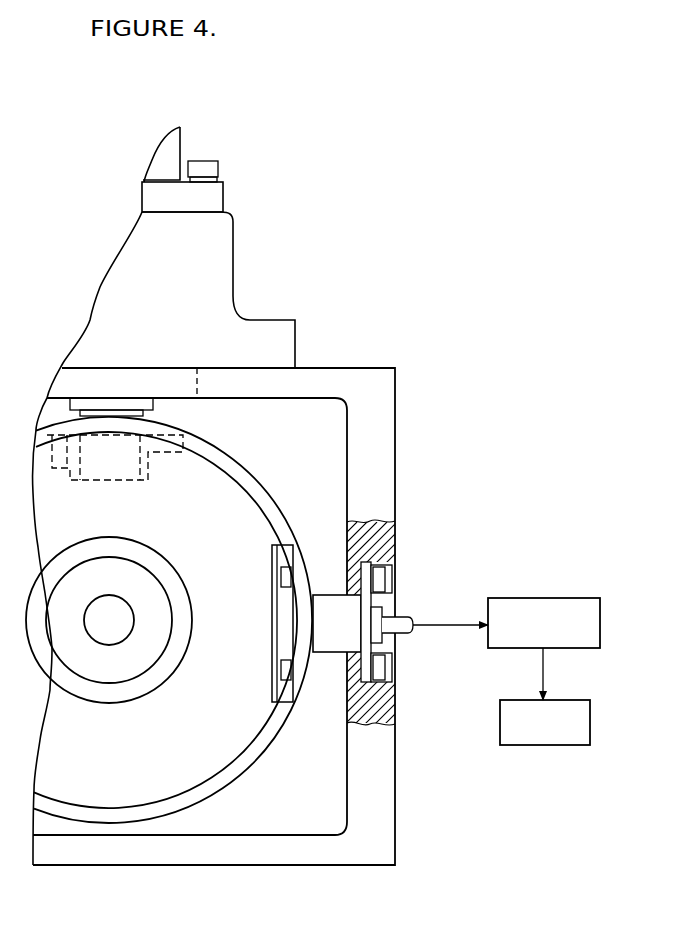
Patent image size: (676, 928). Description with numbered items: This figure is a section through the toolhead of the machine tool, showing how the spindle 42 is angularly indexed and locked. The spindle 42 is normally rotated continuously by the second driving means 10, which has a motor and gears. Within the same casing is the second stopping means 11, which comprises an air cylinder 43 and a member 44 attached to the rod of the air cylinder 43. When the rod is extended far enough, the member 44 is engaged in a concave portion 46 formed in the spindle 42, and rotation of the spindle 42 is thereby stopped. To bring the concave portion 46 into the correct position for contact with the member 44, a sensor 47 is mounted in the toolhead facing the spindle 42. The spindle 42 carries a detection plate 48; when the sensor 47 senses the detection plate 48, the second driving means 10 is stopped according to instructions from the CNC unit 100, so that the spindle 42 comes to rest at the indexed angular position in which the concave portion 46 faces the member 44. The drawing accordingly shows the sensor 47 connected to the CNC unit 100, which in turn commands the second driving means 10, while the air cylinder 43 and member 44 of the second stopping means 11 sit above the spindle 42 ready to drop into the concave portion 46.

The second stopping means 11 is at (270, 153).
The air cylinder 43 is at (205, 212).
The member 44 is at (137, 396).
The spindle 42 is at (208, 806).
The concave portion 46 is at (153, 448).
The detection plate 48 is at (298, 562).
The sensor 47 is at (330, 637).
The CNC unit 100 is at (543, 598).
The second driving means 10 is at (542, 747).